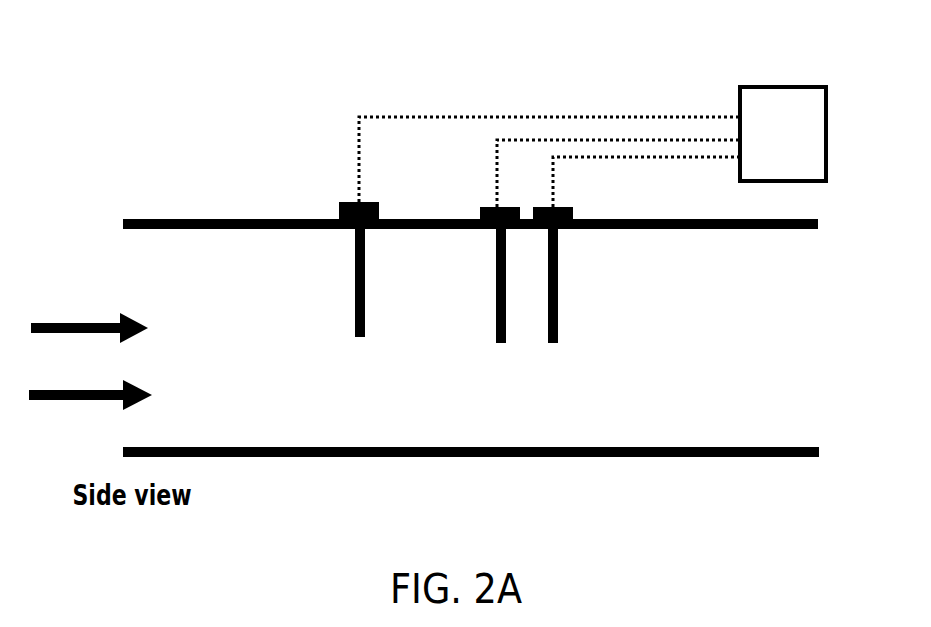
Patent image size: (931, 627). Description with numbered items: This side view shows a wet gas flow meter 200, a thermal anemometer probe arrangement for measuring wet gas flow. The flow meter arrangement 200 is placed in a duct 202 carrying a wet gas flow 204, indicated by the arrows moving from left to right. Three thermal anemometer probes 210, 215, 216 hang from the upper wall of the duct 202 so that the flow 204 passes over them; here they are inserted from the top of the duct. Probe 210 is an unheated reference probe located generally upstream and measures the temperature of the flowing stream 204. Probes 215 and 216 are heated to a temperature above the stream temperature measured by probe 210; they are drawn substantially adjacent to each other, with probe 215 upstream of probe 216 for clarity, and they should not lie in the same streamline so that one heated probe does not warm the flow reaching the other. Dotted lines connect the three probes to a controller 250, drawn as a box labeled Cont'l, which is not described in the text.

The wet gas flow meter 200 is at (286, 134).
The duct 202 is at (168, 220).
The wet gas flow 204 is at (90, 324).
The reference probe 210 is at (356, 290).
The heated probe 215 is at (496, 317).
The heated probe 216 is at (549, 313).
The controller 250 is at (740, 111).